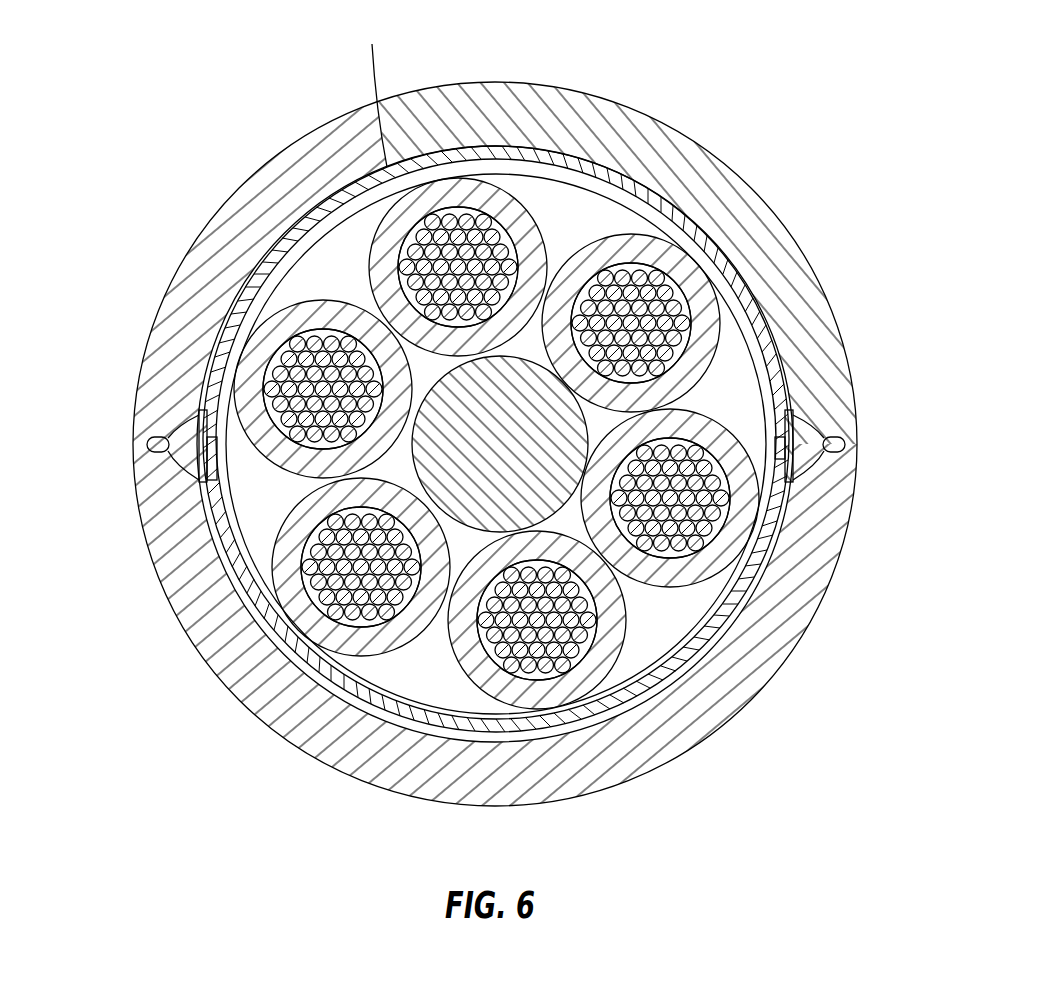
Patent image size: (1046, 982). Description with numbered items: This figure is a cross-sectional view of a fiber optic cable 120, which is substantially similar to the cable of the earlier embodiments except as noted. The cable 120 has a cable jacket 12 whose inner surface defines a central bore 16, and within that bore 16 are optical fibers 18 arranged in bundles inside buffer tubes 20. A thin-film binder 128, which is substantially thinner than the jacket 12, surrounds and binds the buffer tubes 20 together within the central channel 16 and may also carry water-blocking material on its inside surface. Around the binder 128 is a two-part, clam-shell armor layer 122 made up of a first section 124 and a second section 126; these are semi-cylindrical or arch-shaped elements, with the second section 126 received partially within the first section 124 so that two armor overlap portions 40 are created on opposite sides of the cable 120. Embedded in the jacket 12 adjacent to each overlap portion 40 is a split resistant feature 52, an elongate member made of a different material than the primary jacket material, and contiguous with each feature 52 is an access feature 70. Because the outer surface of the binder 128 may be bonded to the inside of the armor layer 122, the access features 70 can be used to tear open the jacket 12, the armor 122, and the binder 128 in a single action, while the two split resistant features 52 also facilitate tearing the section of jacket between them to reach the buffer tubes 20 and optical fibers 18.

The cable 120 is at (838, 206).
The cable jacket 12 is at (697, 160).
The first section 124 is at (495, 406).
The second section 126 is at (556, 737).
The armor layer 122 is at (545, 150).
The thin-film binder 128 is at (320, 235).
The central bore 16 is at (662, 632).
The optical fibers 18 is at (352, 628).
The buffer tubes 20 is at (305, 622).
The overlap portion 40 is at (201, 483).
The split resistant feature 52 is at (152, 436).
The access feature 70 is at (178, 470).